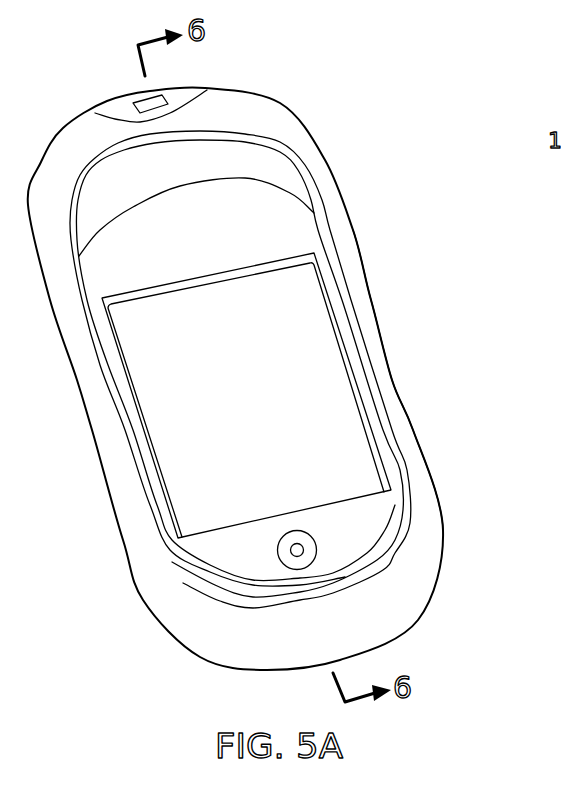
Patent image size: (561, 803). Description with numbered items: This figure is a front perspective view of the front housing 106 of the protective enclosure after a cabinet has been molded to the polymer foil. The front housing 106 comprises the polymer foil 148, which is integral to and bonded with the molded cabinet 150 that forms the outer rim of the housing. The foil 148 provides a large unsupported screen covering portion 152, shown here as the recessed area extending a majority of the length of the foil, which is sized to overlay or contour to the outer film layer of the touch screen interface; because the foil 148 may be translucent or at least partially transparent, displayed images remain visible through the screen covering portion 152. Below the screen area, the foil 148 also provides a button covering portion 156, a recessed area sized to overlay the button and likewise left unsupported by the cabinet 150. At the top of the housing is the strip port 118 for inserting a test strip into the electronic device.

The front housing 106 is at (235, 378).
The strip port 118 is at (142, 99).
The polymer foil 148 is at (93, 207).
The molded cabinet 150 is at (124, 546).
The screen covering portion 152 is at (368, 242).
The button covering portion 156 is at (300, 522).